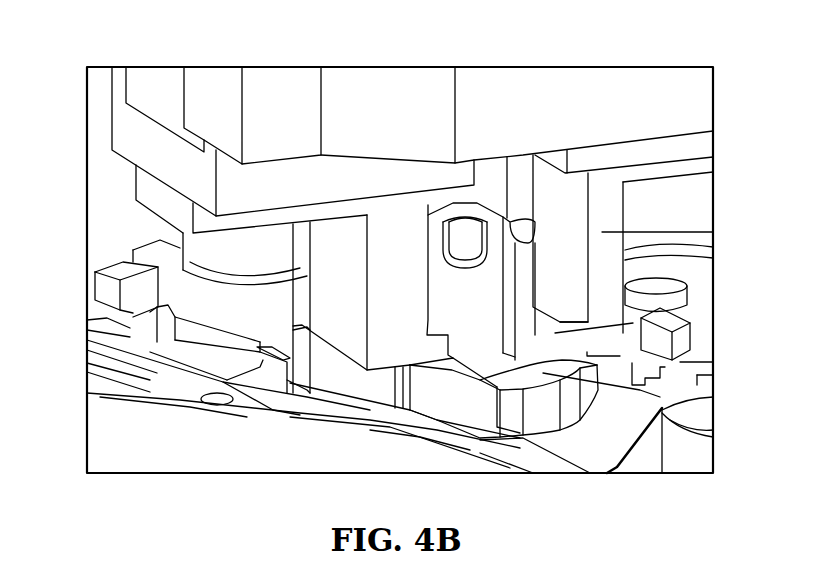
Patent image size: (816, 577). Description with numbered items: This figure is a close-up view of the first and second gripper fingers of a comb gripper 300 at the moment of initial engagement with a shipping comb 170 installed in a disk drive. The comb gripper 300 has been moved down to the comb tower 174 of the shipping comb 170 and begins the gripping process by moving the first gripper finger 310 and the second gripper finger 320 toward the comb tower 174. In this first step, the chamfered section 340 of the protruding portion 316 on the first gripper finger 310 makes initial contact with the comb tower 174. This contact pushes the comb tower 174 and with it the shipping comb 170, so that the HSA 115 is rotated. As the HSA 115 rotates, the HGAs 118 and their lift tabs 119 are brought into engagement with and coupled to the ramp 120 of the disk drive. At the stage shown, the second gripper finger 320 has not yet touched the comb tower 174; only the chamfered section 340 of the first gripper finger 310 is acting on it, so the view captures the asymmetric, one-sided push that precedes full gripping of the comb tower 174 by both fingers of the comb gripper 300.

The comb gripper 300 is at (634, 76).
The first gripper finger 310 is at (602, 232).
The protruding portion 316 is at (557, 316).
The second gripper finger 320 is at (322, 308).
The chamfered section 340 is at (690, 299).
The comb tower 174 is at (487, 307).
The shipping comb 170 is at (467, 408).
The HGA 118 is at (157, 352).
The lift tab 119 is at (120, 345).
The ramp 120 is at (86, 330).
The HSA 115 is at (643, 417).